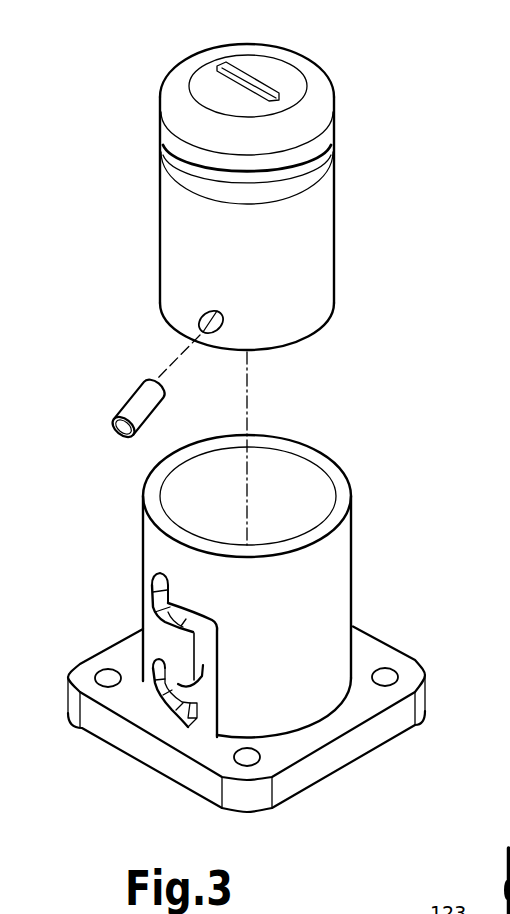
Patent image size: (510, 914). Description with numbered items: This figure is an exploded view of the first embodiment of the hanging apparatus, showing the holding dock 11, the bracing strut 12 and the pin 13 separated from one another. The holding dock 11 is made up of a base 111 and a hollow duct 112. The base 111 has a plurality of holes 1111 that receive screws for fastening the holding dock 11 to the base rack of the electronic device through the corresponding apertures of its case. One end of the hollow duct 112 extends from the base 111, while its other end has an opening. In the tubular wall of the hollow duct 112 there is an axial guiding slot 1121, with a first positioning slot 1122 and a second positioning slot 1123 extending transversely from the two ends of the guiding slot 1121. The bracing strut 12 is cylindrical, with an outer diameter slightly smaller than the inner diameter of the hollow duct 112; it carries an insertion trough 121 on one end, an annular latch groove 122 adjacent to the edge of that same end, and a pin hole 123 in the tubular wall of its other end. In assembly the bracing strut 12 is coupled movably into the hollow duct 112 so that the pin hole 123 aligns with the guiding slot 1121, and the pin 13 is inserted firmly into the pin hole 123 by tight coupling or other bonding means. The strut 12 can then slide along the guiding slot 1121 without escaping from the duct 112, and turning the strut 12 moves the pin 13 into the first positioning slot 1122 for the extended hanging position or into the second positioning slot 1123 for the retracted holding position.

The holding dock 11 is at (251, 613).
The base 111 is at (310, 733).
The holes 1111 is at (388, 675).
The hollow duct 112 is at (300, 507).
The guiding slot 1121 is at (207, 665).
The first positioning slot 1122 is at (160, 603).
The second positioning slot 1123 is at (160, 683).
The bracing strut 12 is at (153, 219).
The insertion trough 121 is at (259, 79).
The annular latch groove 122 is at (186, 166).
The pin hole 123 is at (199, 324).
The pin 13 is at (133, 407).